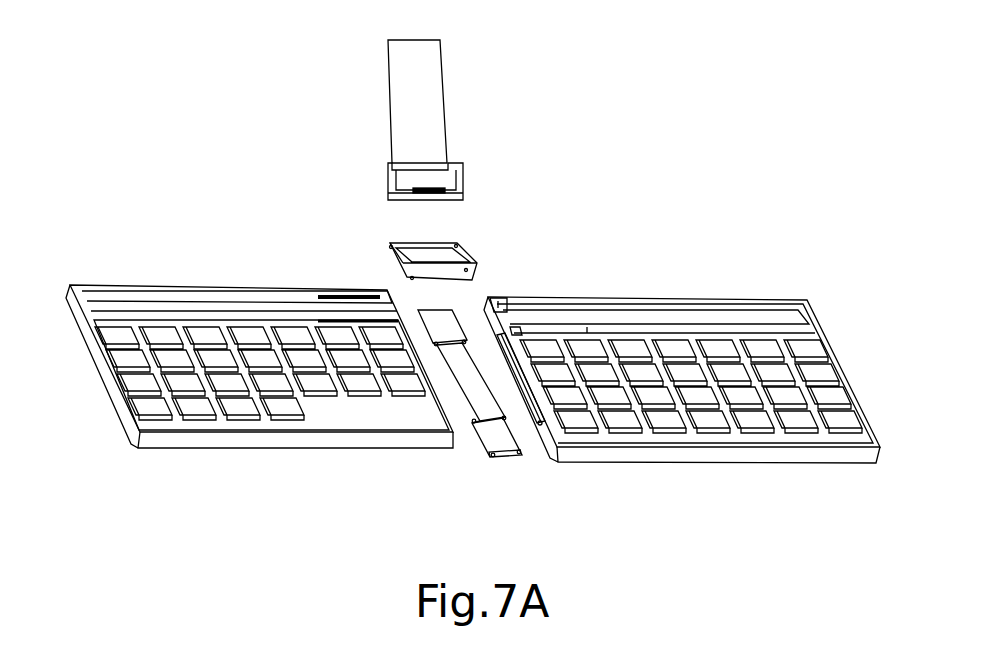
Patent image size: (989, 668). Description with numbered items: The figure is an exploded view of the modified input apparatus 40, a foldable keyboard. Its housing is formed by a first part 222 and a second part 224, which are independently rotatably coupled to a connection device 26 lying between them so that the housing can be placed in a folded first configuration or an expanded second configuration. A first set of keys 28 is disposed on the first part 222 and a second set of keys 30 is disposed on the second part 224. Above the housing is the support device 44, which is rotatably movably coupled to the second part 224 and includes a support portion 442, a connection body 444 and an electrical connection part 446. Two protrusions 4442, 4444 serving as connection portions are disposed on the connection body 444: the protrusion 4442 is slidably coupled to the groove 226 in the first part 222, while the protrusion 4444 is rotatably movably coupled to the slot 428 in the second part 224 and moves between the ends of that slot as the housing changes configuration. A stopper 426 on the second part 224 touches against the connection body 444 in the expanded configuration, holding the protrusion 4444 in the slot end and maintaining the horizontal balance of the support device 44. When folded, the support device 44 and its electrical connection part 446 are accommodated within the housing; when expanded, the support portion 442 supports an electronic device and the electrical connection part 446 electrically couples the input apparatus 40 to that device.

The input apparatus 40 is at (840, 197).
The support device 44 is at (285, 40).
The support portion 442 is at (406, 52).
The electrical connection part 446 is at (427, 187).
The connection body 444 is at (392, 243).
The protrusion 4442 is at (412, 278).
The protrusion 4444 is at (466, 270).
The first part 222 is at (259, 371).
The second part 224 is at (670, 391).
The groove 226 is at (318, 320).
The first set of keys 28 is at (190, 385).
The second set of keys 30 is at (797, 405).
The connection device 26 is at (505, 445).
The stopper 426 is at (497, 333).
The slot 428 is at (515, 330).